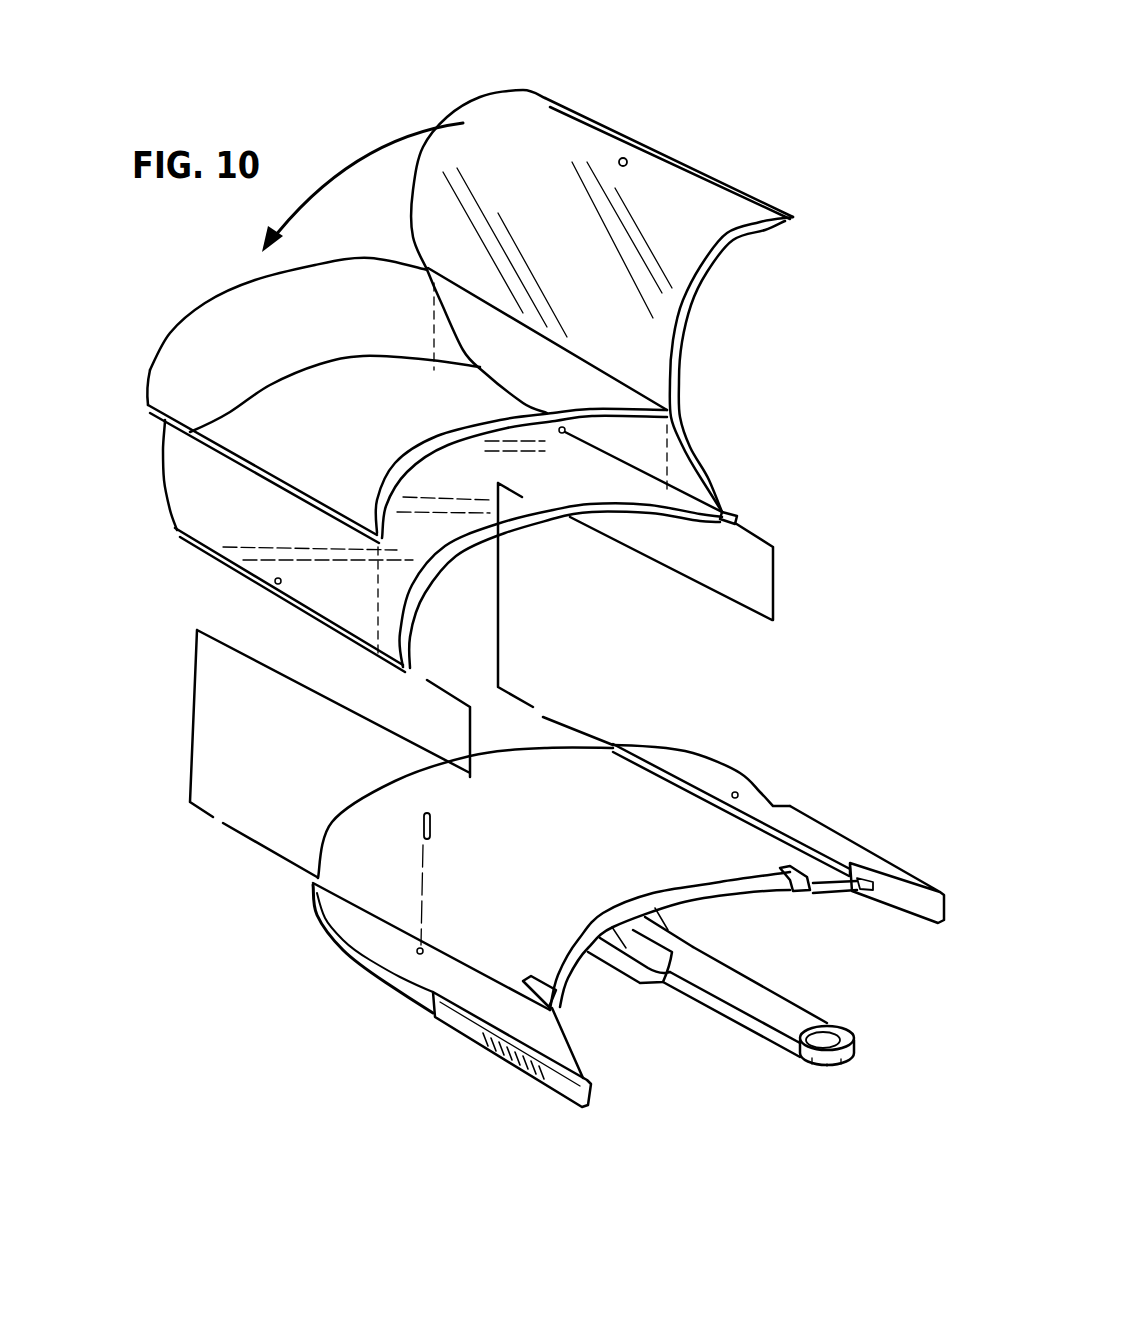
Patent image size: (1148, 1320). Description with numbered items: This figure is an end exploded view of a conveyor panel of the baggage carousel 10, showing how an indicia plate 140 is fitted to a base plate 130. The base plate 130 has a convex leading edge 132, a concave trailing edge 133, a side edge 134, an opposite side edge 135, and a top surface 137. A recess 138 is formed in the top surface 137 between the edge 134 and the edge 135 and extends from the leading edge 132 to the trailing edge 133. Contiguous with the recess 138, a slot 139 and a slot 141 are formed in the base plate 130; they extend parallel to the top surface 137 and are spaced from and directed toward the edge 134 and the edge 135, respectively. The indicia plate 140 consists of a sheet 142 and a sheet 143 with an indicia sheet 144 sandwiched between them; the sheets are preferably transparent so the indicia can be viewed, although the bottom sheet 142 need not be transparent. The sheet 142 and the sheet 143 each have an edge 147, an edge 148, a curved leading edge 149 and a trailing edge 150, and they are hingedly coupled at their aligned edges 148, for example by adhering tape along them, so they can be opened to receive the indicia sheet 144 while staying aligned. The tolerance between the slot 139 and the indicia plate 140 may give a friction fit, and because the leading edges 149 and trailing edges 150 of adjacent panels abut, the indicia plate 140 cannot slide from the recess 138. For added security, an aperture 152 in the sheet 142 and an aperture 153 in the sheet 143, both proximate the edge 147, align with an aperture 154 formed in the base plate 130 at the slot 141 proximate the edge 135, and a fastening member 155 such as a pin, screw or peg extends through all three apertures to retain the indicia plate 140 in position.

The assembly 10 is at (100, 577).
The base plate 130 is at (758, 812).
The leading edge 132 is at (586, 871).
The trailing edge 133 is at (570, 970).
The edge 134 is at (860, 840).
The edge 135 is at (352, 958).
The top surface 137 is at (697, 760).
The recess 138 is at (567, 803).
The slot 139 is at (852, 891).
The indicia plate 140 is at (619, 377).
The slot 141 is at (557, 1013).
The sheet 142 is at (658, 303).
The sheet 143 is at (276, 514).
The indicia sheet 144 is at (213, 335).
The edge 147 is at (200, 553).
The edge 148 is at (633, 134).
The leading edge 149 is at (410, 195).
The trailing edge 150 is at (683, 369).
The aperture 152 is at (628, 167).
The aperture 153 is at (275, 585).
The aperture 154 is at (428, 950).
The fastening member 155 is at (430, 820).